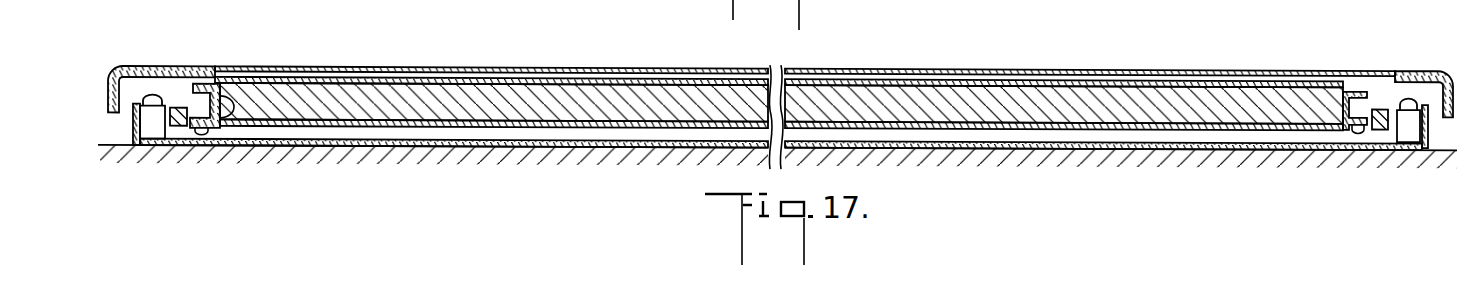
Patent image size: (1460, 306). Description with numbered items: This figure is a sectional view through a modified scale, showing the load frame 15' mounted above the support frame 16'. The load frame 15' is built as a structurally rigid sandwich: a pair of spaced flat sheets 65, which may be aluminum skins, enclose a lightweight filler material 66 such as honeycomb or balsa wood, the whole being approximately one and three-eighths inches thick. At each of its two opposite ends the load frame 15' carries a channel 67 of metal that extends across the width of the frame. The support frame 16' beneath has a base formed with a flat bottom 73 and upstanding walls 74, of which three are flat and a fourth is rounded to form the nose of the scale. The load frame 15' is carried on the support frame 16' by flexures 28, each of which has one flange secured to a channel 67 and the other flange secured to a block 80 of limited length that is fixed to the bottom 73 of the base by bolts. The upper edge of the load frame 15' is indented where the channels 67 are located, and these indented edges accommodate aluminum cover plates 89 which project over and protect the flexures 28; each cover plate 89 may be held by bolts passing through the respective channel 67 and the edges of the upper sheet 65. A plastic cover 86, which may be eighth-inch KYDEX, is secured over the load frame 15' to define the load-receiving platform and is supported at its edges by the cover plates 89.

The cover plate 89 is at (153, 66).
The flexure 28 is at (185, 106).
The plastic cover 86 is at (462, 66).
The load frame 15' is at (779, 52).
The filler material 66 is at (1022, 111).
The sheet 65 is at (357, 119).
The flat bottom 73 is at (508, 141).
The channel 67 is at (232, 112).
The block 80 is at (150, 132).
The upstanding wall 74 is at (1426, 140).
The support frame 16' is at (147, 165).